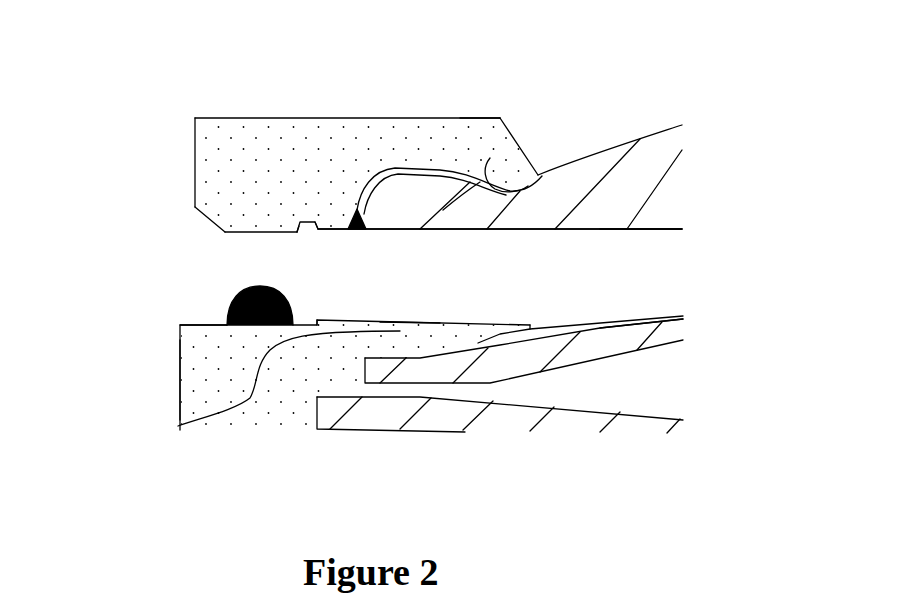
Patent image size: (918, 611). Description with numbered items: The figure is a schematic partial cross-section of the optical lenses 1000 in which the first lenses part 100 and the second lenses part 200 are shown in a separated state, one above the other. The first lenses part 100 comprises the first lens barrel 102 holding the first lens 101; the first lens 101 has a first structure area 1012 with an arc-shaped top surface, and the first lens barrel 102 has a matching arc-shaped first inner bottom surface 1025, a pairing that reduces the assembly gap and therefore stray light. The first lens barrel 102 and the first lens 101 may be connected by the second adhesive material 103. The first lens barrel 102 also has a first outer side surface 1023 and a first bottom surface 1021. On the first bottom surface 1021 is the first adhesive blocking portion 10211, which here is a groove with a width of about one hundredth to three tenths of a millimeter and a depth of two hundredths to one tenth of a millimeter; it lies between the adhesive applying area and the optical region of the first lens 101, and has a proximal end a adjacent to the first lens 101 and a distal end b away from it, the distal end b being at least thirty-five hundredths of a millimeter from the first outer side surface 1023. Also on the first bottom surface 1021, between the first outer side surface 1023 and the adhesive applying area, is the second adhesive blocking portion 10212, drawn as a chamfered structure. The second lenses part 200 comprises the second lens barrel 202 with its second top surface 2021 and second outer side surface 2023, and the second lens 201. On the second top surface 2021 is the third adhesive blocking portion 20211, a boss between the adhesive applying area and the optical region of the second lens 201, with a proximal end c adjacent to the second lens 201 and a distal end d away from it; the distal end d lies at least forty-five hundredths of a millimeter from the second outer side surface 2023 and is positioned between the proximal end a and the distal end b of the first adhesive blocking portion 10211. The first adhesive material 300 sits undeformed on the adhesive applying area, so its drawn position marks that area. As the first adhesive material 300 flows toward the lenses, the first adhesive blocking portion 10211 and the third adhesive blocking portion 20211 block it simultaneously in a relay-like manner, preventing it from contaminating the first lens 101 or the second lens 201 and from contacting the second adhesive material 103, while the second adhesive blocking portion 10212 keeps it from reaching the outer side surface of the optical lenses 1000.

The first lenses part 100 is at (186, 148).
The first lens 101 is at (657, 162).
The first lens barrel 102 is at (278, 143).
The second adhesive material 103 is at (400, 167).
The optical lenses 1000 is at (632, 242).
The first structure area 1012 is at (490, 158).
The first bottom surface 1021 is at (270, 232).
The first outer side surface 1023 is at (197, 158).
The first inner bottom surface 1025 is at (497, 118).
The first adhesive blocking portion 10211 is at (313, 203).
The second adhesive blocking portion 10212 is at (208, 222).
The second lenses part 200 is at (597, 395).
The second lens 201 is at (515, 358).
The second lens barrel 202 is at (270, 418).
The second top surface 2021 is at (225, 328).
The second outer side surface 2023 is at (180, 375).
The third adhesive blocking portion 20211 is at (185, 427).
The first adhesive material 300 is at (227, 312).
The proximal end a is at (315, 231).
The distal end b is at (297, 233).
The proximal end c is at (410, 323).
The distal end d is at (317, 321).